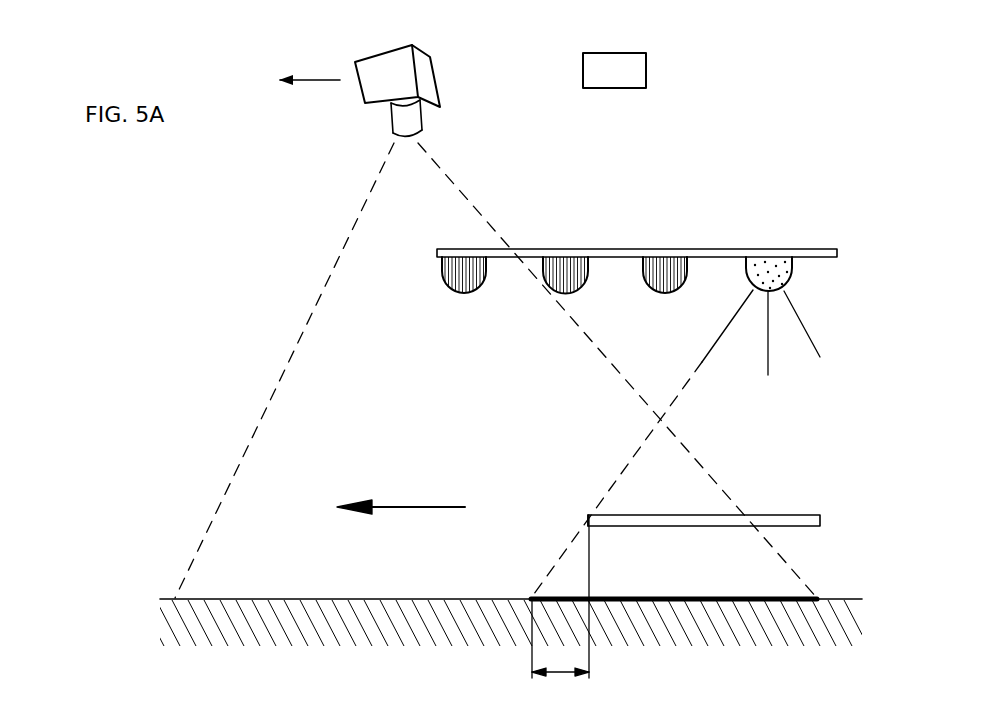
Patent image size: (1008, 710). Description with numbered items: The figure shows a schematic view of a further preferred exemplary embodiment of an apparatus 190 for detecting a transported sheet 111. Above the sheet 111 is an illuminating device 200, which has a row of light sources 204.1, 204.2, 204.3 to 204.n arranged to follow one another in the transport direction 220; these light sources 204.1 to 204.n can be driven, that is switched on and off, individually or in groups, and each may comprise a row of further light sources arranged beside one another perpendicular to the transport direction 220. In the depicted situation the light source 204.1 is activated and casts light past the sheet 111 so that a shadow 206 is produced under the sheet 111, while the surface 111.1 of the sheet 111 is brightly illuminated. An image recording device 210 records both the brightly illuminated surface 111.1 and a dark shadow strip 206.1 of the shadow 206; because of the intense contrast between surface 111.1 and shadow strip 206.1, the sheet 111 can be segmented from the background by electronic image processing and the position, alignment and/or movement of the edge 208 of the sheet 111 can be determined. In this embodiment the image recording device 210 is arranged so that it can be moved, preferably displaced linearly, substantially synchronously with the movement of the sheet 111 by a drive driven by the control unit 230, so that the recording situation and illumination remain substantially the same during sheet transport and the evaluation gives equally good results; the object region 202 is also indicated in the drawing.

The image recording device 210 is at (398, 70).
The control unit 230 is at (648, 73).
The illuminating device 200 is at (642, 354).
The light source 204.n is at (458, 267).
The light source 204.3 is at (558, 270).
The light source 204.2 is at (665, 270).
The light source 204.1 is at (763, 267).
The apparatus 190 is at (320, 237).
The transport direction 220 is at (418, 505).
The object 202 is at (724, 459).
The sheet 111 is at (788, 517).
The surface of the sheet 111.1 is at (657, 522).
The edge of the sheet 208 is at (589, 517).
The shadow 206 is at (772, 598).
The shadow strip 206.1 is at (560, 673).